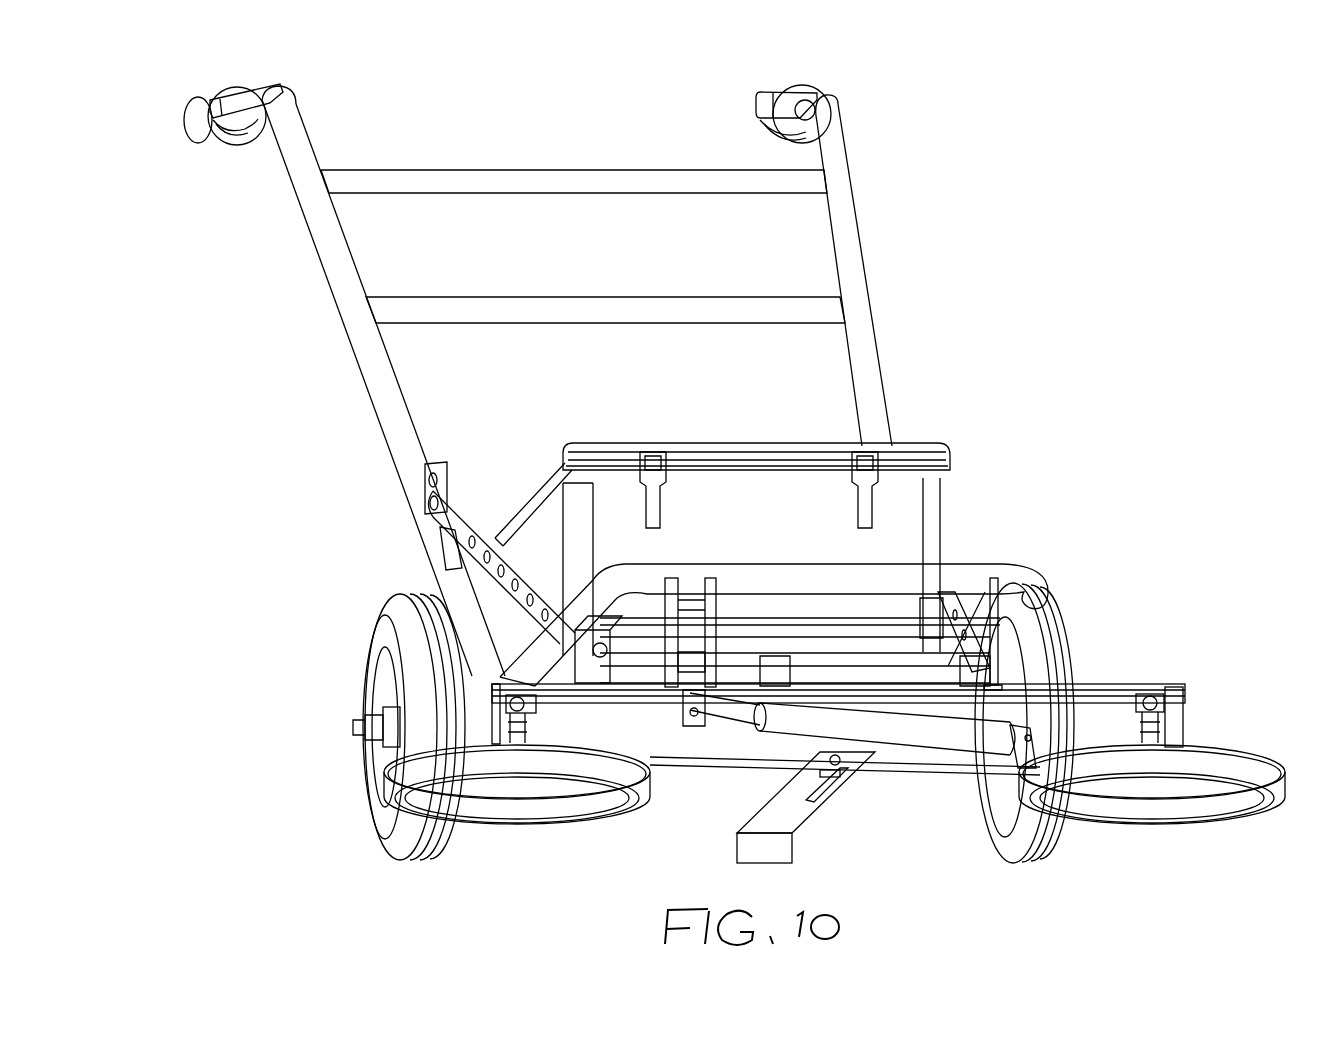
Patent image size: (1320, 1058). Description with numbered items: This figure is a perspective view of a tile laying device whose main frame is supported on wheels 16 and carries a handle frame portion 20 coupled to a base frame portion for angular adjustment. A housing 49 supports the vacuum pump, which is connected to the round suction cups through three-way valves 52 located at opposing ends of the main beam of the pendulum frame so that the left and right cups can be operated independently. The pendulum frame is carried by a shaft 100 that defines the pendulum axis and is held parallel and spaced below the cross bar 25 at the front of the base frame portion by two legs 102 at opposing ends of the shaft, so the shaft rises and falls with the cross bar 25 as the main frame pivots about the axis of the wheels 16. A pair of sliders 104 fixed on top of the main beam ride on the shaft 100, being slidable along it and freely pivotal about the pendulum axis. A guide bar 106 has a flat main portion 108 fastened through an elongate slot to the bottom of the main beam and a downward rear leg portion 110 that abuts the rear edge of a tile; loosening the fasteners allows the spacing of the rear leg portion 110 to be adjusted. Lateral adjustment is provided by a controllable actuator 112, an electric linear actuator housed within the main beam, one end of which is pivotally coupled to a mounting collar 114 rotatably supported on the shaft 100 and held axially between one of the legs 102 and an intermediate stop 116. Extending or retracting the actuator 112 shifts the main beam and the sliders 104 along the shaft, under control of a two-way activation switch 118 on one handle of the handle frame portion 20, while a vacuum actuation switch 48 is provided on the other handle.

The wheels 16 is at (364, 782).
The handle frame portion 20 is at (356, 392).
The cross bar 25 is at (900, 576).
The vacuum actuation switch 48 is at (276, 84).
The housing 49 is at (936, 506).
The three-way valves 52 is at (517, 672).
The shaft 100 is at (1000, 578).
The legs 102 is at (658, 628).
The sliders 104 is at (900, 676).
The guide bar 106 is at (814, 824).
The main portion 108 is at (828, 800).
The rear leg portion 110 is at (782, 856).
The controllable actuator 112 is at (970, 733).
The mounting collar 114 is at (691, 668).
The intermediate stop 116 is at (710, 606).
The two-way activation switch 118 is at (768, 84).